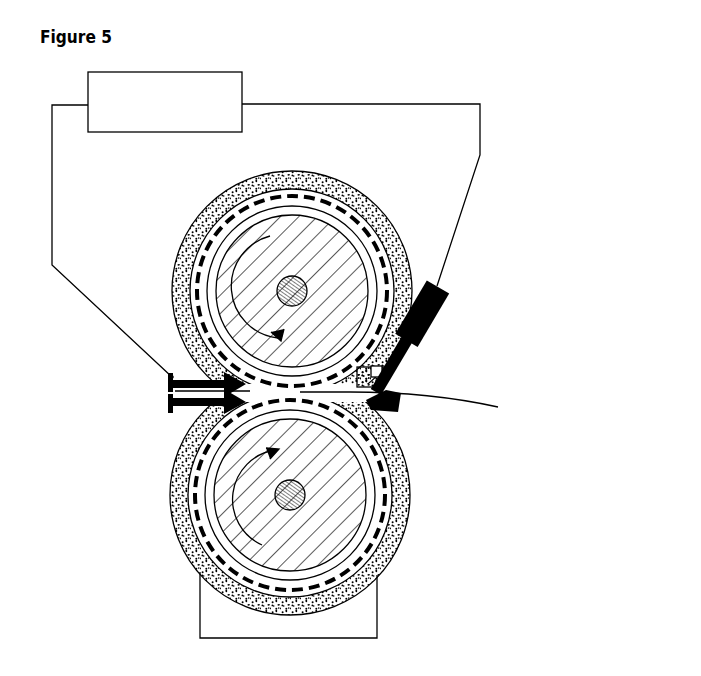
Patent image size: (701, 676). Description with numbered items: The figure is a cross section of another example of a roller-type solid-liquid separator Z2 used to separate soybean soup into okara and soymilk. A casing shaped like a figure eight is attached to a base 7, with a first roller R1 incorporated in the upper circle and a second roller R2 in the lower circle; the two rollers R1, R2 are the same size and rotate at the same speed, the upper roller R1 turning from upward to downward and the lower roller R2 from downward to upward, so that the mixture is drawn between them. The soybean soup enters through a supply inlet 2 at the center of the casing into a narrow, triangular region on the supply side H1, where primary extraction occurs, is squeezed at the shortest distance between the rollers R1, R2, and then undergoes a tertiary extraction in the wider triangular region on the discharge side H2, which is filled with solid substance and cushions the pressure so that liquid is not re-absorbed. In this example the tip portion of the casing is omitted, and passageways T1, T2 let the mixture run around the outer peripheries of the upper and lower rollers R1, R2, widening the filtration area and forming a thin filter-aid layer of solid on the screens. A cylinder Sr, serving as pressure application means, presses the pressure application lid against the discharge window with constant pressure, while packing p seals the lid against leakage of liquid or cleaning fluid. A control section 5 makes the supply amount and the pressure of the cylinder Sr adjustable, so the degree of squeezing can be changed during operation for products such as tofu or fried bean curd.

The control section 5 is at (243, 90).
The solid-liquid separator Z2 is at (485, 76).
The first roller R1 is at (318, 192).
The second roller R2 is at (200, 543).
The passageway T1 is at (175, 298).
The passageway T2 is at (410, 287).
The prescribed region on the supply side H1 is at (193, 343).
The prescribed region on the discharge side H2 is at (383, 384).
The supply inlet 2 is at (168, 387).
The cylinder Sr is at (445, 307).
The packing p is at (343, 405).
The base 7 is at (368, 627).